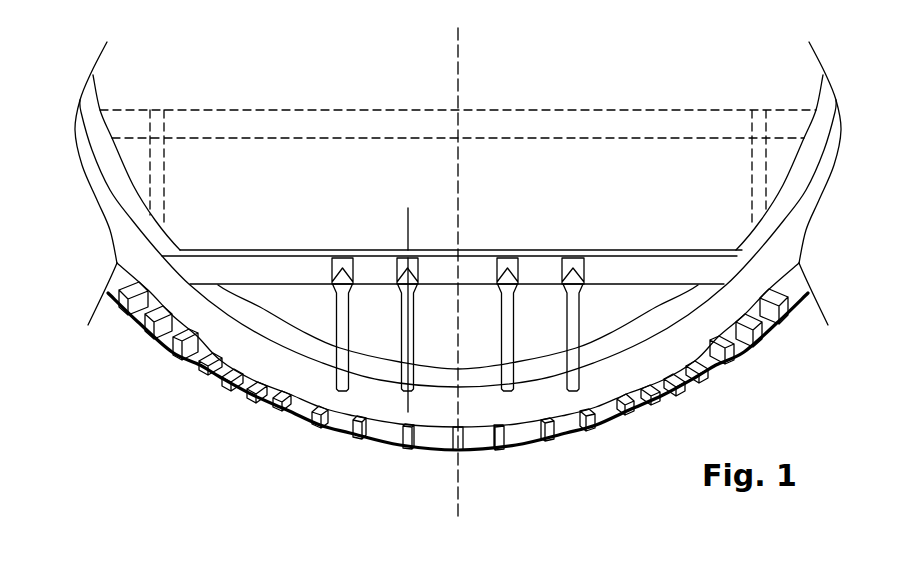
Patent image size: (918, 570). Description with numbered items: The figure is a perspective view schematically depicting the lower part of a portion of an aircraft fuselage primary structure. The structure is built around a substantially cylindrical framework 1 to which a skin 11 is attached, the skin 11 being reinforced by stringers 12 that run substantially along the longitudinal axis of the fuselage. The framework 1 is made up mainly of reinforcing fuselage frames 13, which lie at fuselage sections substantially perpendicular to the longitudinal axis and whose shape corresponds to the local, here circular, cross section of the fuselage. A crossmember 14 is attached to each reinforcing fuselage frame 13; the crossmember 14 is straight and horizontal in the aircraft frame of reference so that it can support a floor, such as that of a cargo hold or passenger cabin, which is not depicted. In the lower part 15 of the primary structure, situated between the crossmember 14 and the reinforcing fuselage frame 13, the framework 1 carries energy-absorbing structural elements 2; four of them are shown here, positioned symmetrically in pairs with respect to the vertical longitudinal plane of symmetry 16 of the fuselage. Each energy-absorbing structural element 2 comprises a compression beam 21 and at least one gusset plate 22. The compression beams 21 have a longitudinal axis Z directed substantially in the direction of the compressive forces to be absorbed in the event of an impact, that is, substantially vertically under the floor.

The framework 1 is at (107, 65).
The vertical longitudinal plane of symmetry 16 is at (463, 47).
The reinforcing fuselage frame 13 is at (137, 253).
The crossmember 14 is at (665, 267).
The gusset plate 22 is at (574, 258).
The compression beam 21 is at (516, 379).
The energy-absorbing structural element 2 is at (490, 337).
The lower part 15 is at (374, 340).
The skin 11 is at (187, 367).
The stringer 12 is at (205, 370).